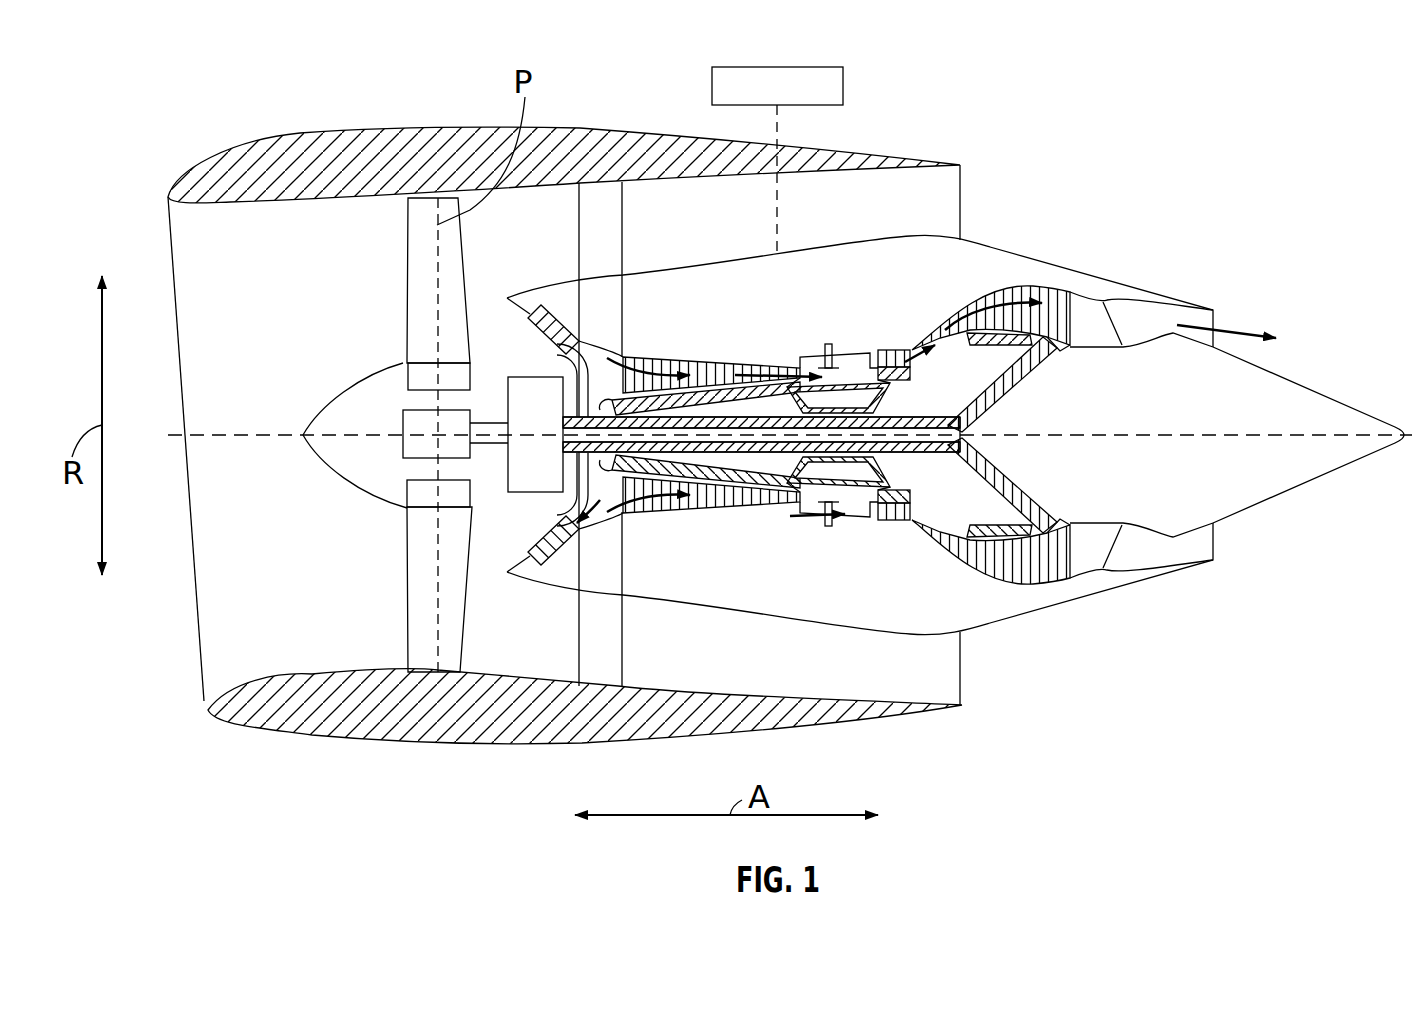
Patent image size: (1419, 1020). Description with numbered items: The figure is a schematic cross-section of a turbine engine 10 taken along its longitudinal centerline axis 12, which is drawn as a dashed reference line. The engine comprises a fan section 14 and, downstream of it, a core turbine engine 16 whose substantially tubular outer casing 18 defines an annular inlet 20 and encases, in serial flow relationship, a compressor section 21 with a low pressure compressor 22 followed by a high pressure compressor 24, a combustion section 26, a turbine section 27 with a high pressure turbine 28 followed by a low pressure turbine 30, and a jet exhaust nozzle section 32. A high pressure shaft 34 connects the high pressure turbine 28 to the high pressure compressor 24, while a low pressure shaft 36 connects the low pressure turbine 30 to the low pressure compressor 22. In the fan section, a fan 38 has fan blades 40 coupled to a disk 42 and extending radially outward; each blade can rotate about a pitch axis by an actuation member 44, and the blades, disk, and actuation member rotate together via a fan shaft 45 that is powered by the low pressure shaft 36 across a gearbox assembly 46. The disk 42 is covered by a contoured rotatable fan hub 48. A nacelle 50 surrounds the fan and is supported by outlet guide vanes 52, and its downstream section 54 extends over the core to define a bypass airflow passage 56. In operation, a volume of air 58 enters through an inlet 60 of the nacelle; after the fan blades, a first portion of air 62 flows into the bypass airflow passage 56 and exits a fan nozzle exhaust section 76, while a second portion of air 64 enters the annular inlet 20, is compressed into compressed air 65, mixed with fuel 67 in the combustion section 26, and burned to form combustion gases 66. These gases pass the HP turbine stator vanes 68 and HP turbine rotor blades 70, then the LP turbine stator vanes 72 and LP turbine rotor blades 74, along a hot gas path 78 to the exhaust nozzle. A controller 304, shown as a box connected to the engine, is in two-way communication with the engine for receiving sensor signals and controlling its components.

The turbine engine 10 is at (1239, 94).
The centerline axis 12 is at (1190, 430).
The fan section 14 is at (388, 216).
The core turbine engine 16 is at (833, 266).
The outer casing 18 is at (747, 610).
The annular inlet 20 is at (521, 553).
The compressor section 21 is at (701, 296).
The low pressure compressor 22 is at (587, 530).
The high pressure compressor 24 is at (667, 497).
The combustion section 26 is at (847, 512).
The turbine section 27 is at (954, 287).
The high pressure turbine 28 is at (920, 517).
The low pressure turbine 30 is at (1055, 587).
The jet exhaust nozzle section 32 is at (1120, 555).
The high pressure shaft 34 is at (826, 350).
The low pressure shaft 36 is at (945, 417).
The fan 38 is at (318, 528).
The fan blades 40 is at (403, 570).
The disk 42 is at (420, 377).
The actuation member 44 is at (400, 425).
The fan shaft 45 is at (507, 425).
The gearbox assembly 46 is at (518, 390).
The fan hub 48 is at (317, 457).
The nacelle 50 is at (390, 743).
The outlet guide vanes 52 is at (623, 217).
The downstream section 54 is at (867, 148).
The bypass airflow passage 56 is at (733, 219).
The volume of air 58 is at (130, 282).
The inlet 60 is at (195, 603).
The first portion of air 62 is at (521, 233).
The second portion of air 64 is at (565, 328).
The compressed air 65 is at (687, 367).
The combustion gases 66 is at (907, 352).
The fuel 67 is at (831, 343).
The HP turbine stator vanes 68 is at (887, 517).
The HP turbine rotor blades 70 is at (895, 505).
The LP turbine stator vanes 72 is at (968, 555).
The LP turbine rotor blades 74 is at (980, 565).
The fan nozzle exhaust section 76 is at (950, 188).
The hot gas path 78 is at (950, 329).
The controller 304 is at (742, 66).